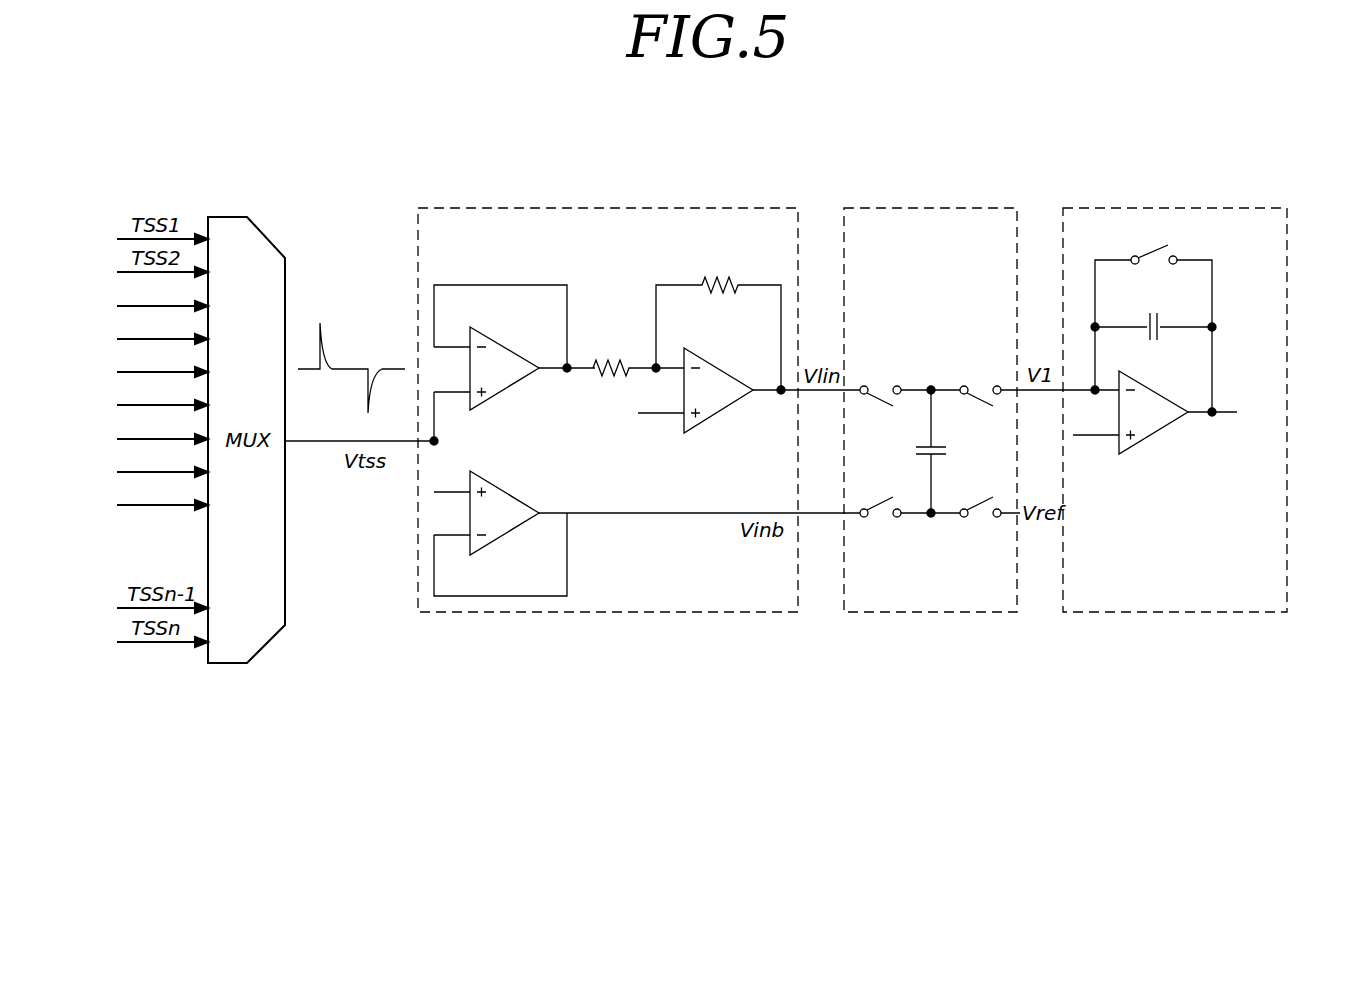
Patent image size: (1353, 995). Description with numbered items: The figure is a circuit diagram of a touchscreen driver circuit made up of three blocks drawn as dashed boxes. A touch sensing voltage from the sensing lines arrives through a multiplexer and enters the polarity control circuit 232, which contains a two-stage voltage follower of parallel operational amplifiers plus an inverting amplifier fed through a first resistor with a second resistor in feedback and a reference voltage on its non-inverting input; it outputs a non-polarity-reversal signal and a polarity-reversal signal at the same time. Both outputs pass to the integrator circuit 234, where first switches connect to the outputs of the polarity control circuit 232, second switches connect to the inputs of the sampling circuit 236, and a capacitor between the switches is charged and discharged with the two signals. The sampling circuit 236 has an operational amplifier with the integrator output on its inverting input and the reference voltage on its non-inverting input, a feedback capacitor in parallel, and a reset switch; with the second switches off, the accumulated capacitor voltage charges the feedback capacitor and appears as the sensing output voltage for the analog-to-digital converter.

The polarity control circuit 232 is at (607, 612).
The integrator circuit 234 is at (929, 612).
The sampling circuit 236 is at (1172, 612).